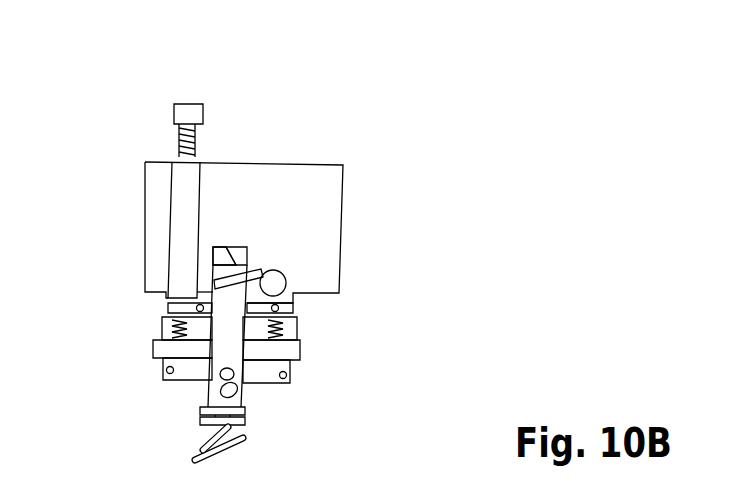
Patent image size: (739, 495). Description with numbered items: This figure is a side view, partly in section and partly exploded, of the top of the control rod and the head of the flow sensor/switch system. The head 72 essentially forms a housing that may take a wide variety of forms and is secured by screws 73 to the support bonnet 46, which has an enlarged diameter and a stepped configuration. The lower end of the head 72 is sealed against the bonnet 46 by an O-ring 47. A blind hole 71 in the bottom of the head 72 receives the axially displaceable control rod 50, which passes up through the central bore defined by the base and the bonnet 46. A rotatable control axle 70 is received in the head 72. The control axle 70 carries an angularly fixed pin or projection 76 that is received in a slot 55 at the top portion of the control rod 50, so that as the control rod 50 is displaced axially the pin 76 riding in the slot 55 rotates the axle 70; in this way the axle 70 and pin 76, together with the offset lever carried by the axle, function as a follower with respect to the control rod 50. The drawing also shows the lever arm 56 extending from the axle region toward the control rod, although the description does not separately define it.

The screw 73 is at (183, 105).
The head 72 is at (313, 193).
The blind hole 71 is at (214, 252).
The lever arm 56 is at (240, 258).
The slot 55 is at (236, 270).
The pin 76 is at (220, 284).
The rotatable control axle 70 is at (275, 284).
The O-ring 47 is at (277, 308).
The support bonnet 46 is at (281, 352).
The control rod 50 is at (230, 352).